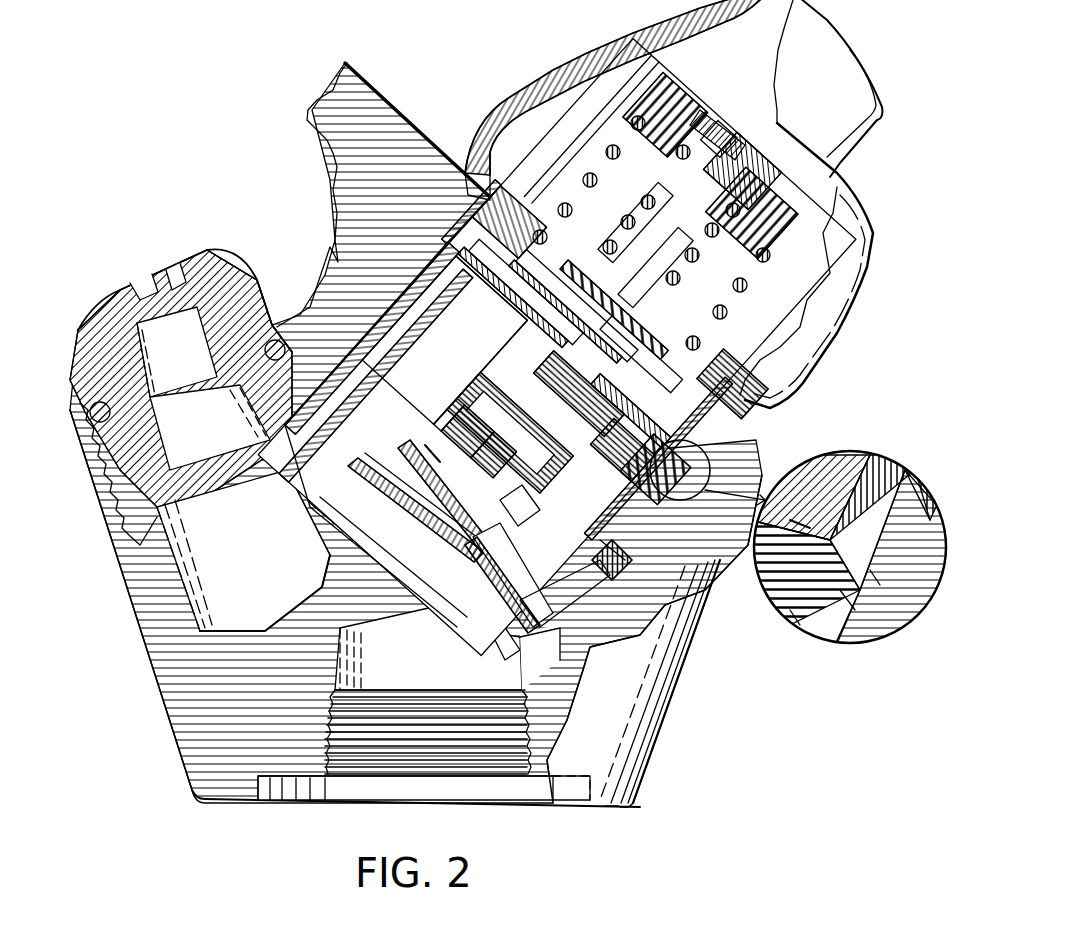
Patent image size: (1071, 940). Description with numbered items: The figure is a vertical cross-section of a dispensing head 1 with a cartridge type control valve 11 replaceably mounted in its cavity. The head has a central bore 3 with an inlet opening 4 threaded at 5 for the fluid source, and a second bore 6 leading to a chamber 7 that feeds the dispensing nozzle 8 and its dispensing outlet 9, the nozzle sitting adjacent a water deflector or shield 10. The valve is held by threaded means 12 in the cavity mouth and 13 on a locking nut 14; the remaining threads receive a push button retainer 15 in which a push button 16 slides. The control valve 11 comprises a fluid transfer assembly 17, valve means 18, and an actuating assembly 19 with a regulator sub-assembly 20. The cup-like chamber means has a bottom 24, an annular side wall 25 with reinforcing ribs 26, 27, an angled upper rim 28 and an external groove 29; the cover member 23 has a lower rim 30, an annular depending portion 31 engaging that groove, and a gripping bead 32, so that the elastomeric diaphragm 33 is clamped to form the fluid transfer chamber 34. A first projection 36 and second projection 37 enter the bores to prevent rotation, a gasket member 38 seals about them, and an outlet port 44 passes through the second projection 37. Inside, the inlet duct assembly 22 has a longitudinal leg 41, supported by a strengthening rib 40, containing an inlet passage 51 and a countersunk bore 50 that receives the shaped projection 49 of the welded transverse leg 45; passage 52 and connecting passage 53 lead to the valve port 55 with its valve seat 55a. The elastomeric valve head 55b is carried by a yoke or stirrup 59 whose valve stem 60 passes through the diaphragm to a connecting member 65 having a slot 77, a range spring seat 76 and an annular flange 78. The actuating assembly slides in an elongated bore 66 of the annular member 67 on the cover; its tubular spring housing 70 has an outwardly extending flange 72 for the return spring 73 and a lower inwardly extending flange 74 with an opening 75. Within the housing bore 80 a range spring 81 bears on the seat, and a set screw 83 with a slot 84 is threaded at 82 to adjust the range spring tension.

The dispensing head 1 is at (440, 111).
The central bore 3 is at (462, 620).
The inlet opening 4 is at (426, 680).
The threads 5 is at (470, 768).
The second bore 6 is at (362, 537).
The chamber 7 is at (252, 560).
The dispensing nozzle 8 is at (98, 348).
The dispensing outlet 9 is at (213, 347).
The water deflector or shield 10 is at (372, 95).
The cartridge type control valve 11 is at (361, 351).
The threaded means 12 is at (462, 183).
The threaded means 13 is at (448, 162).
The locking nut 14 is at (515, 172).
The push button retainer 15 is at (498, 98).
The push button 16 is at (860, 115).
The fluid transfer assembly 17 is at (417, 262).
The valve means 18 is at (449, 396).
The actuating assembly 19 is at (600, 143).
The regulator sub-assembly 20 is at (722, 115).
The inlet duct assembly 22 is at (513, 392).
The cover member 23 is at (735, 402).
The bottom 24 is at (428, 518).
The annular side wall 25 is at (410, 358).
The reinforcing rib 26 is at (800, 625).
The reinforcing rib 27 is at (592, 606).
The upper edge or rim 28 is at (655, 467).
The external groove or countersurface 29 is at (845, 600).
The lower edge or rim 30 is at (855, 520).
The annular depending portion 31 is at (876, 580).
The gripping bead 32 is at (808, 520).
The elastomeric diaphragm member 33 is at (805, 470).
The fluid transfer chamber 34 is at (470, 357).
The first downwardly extending projection 36 is at (468, 582).
The second downwardly extending projection 37 is at (345, 490).
The gasket member 38 is at (537, 640).
The strengthening rib 40 is at (405, 472).
The longitudinal leg 41 is at (508, 558).
The outlet passage or port 44 is at (362, 440).
The transverse leg 45 is at (620, 452).
The shaped projection 49 is at (612, 555).
The shaped countersunk bore 50 is at (428, 448).
The inlet passage 51 is at (523, 582).
The passage 52 is at (521, 515).
The connecting passage 53 is at (505, 430).
The valve port 55 is at (474, 430).
The valve seat 55a is at (486, 480).
The valve head 55b is at (432, 436).
The yoke member or stirrup 59 is at (580, 394).
The valve stem 60 is at (636, 416).
The connecting member 65 is at (562, 305).
The elongated bore 66 is at (727, 300).
The annular member 67 is at (575, 183).
The tubular spring housing 70 is at (750, 282).
The outwardly extending flange 72 is at (645, 96).
The return spring 73 is at (773, 257).
The inwardly extending flange or shoulder 74 is at (636, 352).
The opening 75 is at (625, 313).
The range spring seat 76 is at (705, 270).
The slot 77 is at (660, 262).
The annular flange 78 is at (528, 265).
The bore 80 is at (630, 130).
The range spring 81 is at (660, 204).
The threads 82 is at (750, 214).
The range spring set screw 83 is at (767, 175).
The slot 84 is at (740, 150).